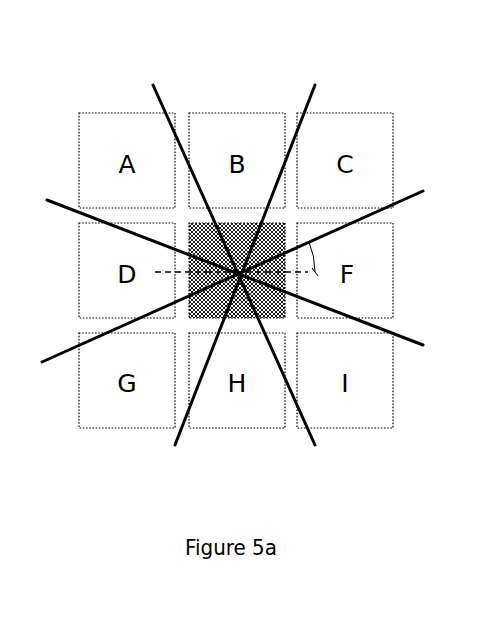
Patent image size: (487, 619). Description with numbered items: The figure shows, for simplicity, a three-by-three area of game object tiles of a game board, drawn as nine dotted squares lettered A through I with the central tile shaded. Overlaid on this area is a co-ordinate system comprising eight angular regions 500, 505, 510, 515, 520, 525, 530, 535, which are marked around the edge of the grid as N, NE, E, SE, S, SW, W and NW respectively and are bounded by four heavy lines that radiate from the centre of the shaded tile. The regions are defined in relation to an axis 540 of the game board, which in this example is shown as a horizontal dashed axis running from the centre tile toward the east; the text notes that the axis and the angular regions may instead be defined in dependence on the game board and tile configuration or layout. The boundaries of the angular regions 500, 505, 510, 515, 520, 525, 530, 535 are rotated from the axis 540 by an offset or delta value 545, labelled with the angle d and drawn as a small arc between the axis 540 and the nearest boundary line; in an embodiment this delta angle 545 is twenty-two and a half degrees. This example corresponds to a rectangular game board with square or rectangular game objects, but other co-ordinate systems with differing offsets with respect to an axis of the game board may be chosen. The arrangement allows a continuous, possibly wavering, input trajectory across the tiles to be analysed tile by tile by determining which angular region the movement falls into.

The angular region 500 is at (245, 57).
The angular region 505 is at (411, 82).
The angular region 510 is at (429, 256).
The angular region 515 is at (412, 450).
The angular region 520 is at (245, 463).
The angular region 525 is at (61, 456).
The angular region 530 is at (36, 258).
The angular region 535 is at (66, 73).
The axis 540 is at (307, 273).
The offset or delta value 545 is at (318, 254).